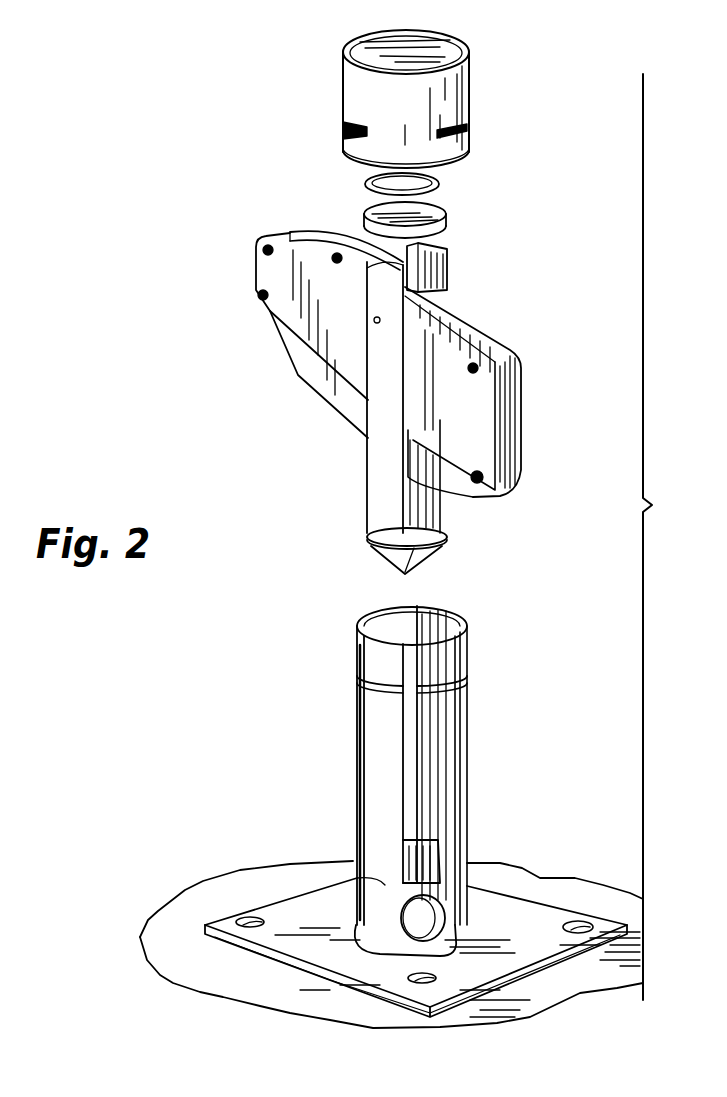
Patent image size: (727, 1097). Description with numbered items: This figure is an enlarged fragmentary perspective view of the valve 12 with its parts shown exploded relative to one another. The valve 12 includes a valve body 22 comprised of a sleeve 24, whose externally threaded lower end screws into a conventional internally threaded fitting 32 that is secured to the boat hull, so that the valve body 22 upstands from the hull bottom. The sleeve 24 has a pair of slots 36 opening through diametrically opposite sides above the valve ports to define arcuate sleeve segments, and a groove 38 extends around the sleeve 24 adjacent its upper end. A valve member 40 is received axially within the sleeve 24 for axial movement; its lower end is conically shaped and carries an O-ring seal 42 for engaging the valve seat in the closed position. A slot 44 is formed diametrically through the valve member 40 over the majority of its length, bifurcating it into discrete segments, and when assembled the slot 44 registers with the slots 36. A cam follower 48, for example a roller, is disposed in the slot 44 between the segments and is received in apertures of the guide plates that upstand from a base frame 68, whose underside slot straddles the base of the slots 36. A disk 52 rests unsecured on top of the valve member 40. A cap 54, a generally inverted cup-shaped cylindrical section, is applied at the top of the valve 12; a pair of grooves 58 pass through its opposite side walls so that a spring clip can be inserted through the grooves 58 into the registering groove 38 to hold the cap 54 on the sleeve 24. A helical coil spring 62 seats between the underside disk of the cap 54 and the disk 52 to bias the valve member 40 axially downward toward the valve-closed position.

The valve 12 is at (260, 445).
The valve body 22 is at (357, 783).
The sleeve 24 is at (378, 840).
The fitting 32 is at (285, 908).
The slots 36 is at (398, 620).
The groove 38 is at (357, 677).
The valve member 40 is at (367, 497).
The O-ring seal 42 is at (446, 541).
The slot 44 is at (376, 256).
The cam follower 48 is at (432, 297).
The disk 52 is at (446, 238).
The cap 54 is at (342, 66).
The grooves 58 is at (345, 126).
The helical coil spring 62 is at (441, 186).
The base frame 68 is at (474, 352).